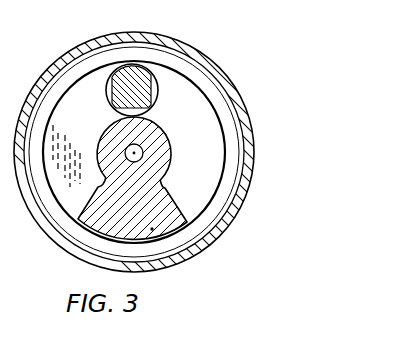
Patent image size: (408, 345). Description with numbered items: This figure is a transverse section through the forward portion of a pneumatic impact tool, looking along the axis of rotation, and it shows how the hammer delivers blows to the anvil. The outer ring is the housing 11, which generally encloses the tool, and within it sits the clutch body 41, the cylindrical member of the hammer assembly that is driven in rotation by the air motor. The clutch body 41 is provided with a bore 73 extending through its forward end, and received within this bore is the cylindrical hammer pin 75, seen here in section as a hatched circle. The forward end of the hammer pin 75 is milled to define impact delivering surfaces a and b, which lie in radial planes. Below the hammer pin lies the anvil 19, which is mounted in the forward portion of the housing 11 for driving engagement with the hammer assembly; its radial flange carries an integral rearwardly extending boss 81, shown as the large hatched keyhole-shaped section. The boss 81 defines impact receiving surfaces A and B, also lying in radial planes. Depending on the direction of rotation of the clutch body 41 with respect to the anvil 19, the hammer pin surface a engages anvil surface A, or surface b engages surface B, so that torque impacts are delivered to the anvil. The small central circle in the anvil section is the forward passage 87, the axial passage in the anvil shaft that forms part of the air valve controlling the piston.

The housing 11 is at (250, 122).
The anvil 19 is at (170, 162).
The clutch body 41 is at (52, 118).
The bore 73 is at (113, 104).
The hammer pin 75 is at (128, 75).
The boss 81 is at (152, 229).
The forward passage 87 is at (138, 149).
The impact delivering surface a is at (108, 91).
The impact delivering surface b is at (153, 90).
The impact receiving surface A is at (94, 194).
The impact receiving surface B is at (171, 198).